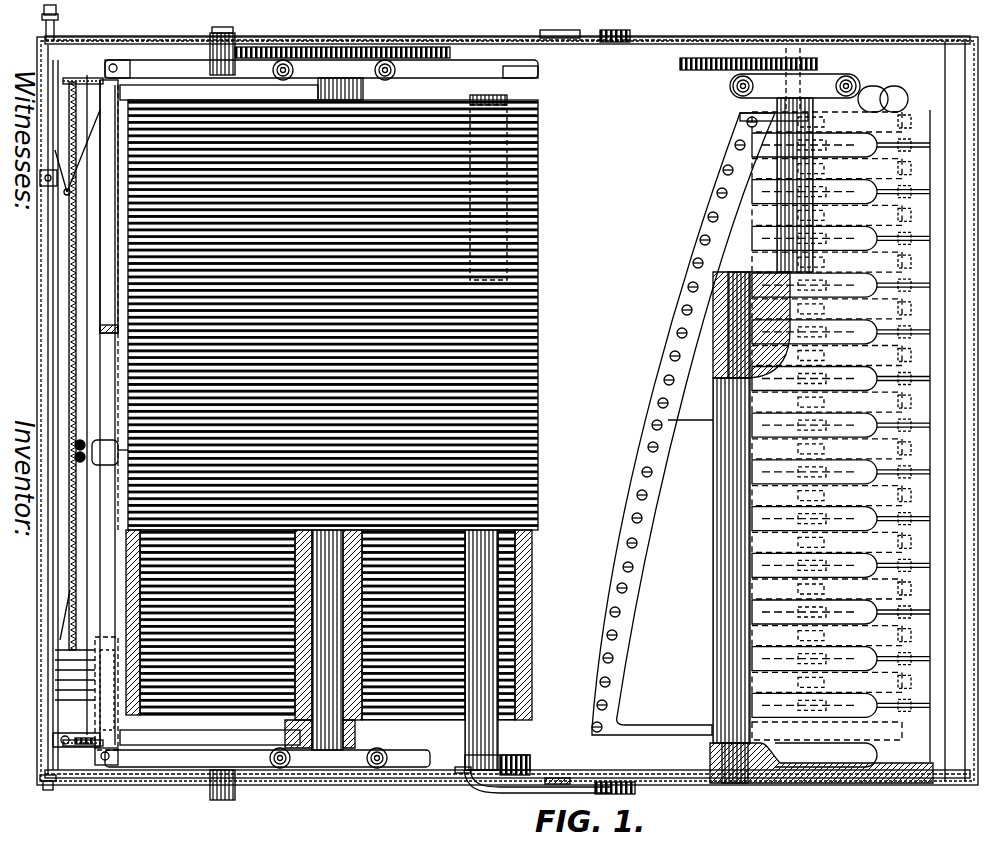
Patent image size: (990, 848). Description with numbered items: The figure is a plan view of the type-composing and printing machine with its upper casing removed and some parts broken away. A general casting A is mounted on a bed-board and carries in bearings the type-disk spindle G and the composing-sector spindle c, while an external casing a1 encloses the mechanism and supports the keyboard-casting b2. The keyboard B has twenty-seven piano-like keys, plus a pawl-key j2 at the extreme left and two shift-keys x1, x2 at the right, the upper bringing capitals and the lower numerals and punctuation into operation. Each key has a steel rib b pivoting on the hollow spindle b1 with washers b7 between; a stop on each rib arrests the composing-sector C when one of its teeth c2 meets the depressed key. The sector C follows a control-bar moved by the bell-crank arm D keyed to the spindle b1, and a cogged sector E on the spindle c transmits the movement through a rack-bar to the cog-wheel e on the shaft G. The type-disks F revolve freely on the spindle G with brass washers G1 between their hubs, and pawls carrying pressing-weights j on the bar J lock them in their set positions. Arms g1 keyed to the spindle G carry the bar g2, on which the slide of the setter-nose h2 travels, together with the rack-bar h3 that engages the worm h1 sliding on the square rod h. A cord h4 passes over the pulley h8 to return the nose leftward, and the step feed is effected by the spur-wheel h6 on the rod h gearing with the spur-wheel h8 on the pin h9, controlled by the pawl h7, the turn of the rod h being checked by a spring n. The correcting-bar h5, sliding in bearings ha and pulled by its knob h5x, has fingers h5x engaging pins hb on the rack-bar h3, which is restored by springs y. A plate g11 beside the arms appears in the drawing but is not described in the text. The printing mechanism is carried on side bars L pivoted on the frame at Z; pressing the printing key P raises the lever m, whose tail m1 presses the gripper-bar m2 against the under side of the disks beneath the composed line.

The printing key P is at (905, 60).
The side bars L is at (305, 40).
The pivot Z is at (210, 33).
The cog-wheel e is at (450, 53).
The general casting A is at (321, 414).
The plate g'' g11 is at (219, 93).
The type-disks F is at (538, 150).
The type-disk spindle G is at (325, 740).
The brass washers G1 is at (365, 700).
The gripper-bar m2 is at (495, 757).
The tail of lever m1 is at (450, 765).
The lever m is at (587, 411).
The external casing a1 is at (558, 782).
The cogged sector E is at (820, 66).
The shift-key x1 is at (872, 100).
The shift-key x2 is at (894, 99).
The composing-sector C is at (775, 58).
The teeth c2 is at (690, 285).
The composing-sector spindle c is at (652, 735).
The bell-crank arm D is at (718, 783).
The hollow spindle b1 is at (777, 228).
The steel rib b is at (713, 330).
The washers b7 is at (713, 350).
The keyboard-casting b2 is at (710, 750).
The pawl-key j2 is at (826, 752).
The keyboard B is at (841, 428).
The square rod h is at (22, 676).
The rack-bar h3 is at (70, 366).
The bar J is at (109, 206).
The bar g2 is at (115, 333).
The spring n is at (98, 76).
The springs y is at (80, 78).
The correcting-bar h5 is at (56, 26).
The knob h5x is at (68, 155).
The bearings ha is at (40, 176).
The pins hb is at (66, 192).
The worm h1 is at (95, 445).
The setter-nose h2 is at (100, 465).
The cord h4 is at (103, 520).
The pressing-weight j is at (55, 680).
The spur-wheel h6 is at (120, 640).
The pin h9 is at (60, 725).
The pawl h7 is at (120, 752).
The spur-wheel h8 is at (110, 735).
The arms g1 is at (220, 736).